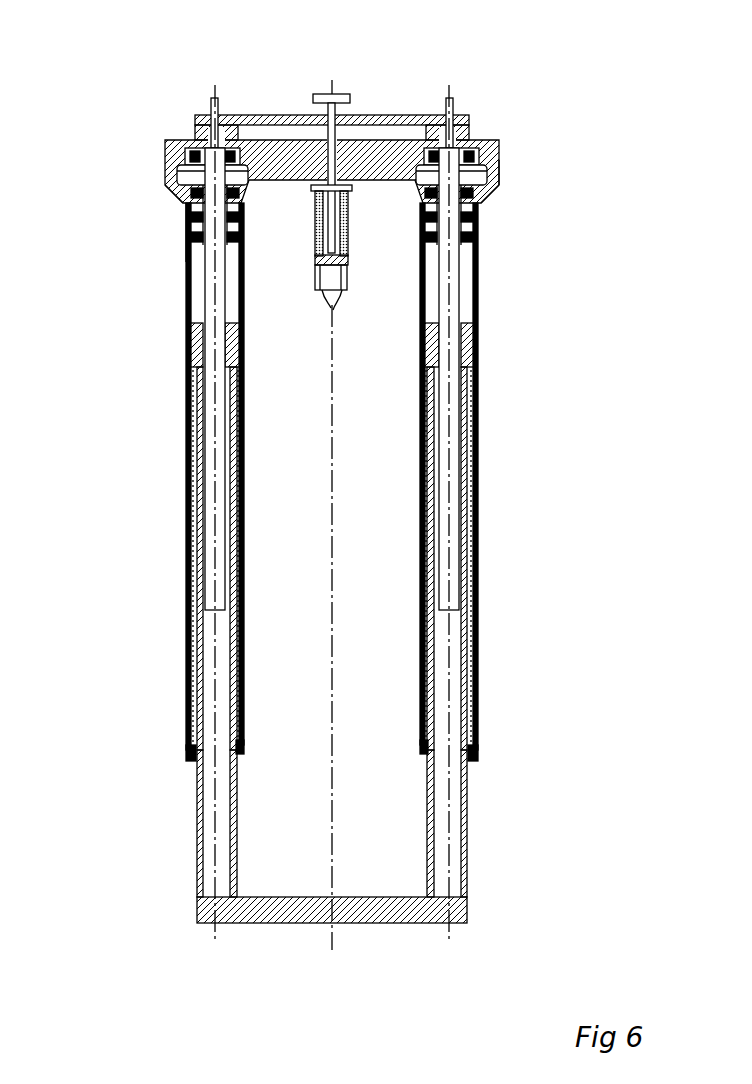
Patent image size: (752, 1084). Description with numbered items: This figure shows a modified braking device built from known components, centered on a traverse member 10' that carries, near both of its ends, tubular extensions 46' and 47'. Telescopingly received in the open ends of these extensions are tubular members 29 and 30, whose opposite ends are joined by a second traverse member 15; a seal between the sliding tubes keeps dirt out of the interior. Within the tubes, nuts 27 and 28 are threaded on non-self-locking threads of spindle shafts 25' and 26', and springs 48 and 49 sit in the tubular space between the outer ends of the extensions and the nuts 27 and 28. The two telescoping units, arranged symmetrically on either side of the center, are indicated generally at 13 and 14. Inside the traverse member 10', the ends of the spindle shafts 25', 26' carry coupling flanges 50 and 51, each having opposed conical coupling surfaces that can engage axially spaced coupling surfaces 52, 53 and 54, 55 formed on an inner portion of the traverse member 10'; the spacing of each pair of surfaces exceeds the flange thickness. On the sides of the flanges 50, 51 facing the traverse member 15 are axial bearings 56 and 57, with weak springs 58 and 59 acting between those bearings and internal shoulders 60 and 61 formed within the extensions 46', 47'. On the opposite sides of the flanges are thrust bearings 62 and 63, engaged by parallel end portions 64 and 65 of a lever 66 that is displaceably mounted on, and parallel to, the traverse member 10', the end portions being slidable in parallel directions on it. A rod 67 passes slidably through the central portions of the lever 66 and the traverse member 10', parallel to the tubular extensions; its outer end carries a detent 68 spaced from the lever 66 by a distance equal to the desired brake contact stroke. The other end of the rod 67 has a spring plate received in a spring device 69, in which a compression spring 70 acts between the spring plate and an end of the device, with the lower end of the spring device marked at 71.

The traverse member 10' is at (332, 107).
The right piston-cylinder unit 13 is at (503, 515).
The left piston-cylinder unit 14 is at (162, 517).
The traverse member 15 is at (318, 923).
The threaded spindle shaft 25' is at (521, 379).
The threaded spindle shaft 26' is at (138, 379).
The nut 27 is at (477, 345).
The nut 28 is at (187, 372).
The tubular member 29 is at (468, 825).
The tubular member 30 is at (196, 828).
The tubular extension 46' is at (514, 342).
The tubular extension 47' is at (146, 345).
The spring 48 is at (478, 745).
The spring 49 is at (187, 735).
The coupling flange 50 is at (480, 176).
The coupling flange 51 is at (187, 175).
The coupling surface 52 is at (462, 152).
The coupling surface 53 is at (496, 183).
The coupling surface 54 is at (165, 165).
The coupling surface 55 is at (172, 193).
The axial bearing 56 is at (479, 197).
The axial bearing 57 is at (183, 210).
The weak spring 58 is at (467, 215).
The weak spring 59 is at (186, 232).
The internal shoulder 60 is at (474, 240).
The internal shoulder 61 is at (185, 252).
The thrust bearing 62 is at (472, 142).
The thrust bearing 63 is at (193, 133).
The lever end portion 64 is at (470, 130).
The lever end portion 65 is at (193, 130).
The lever 66 is at (255, 116).
The rod 67 is at (341, 184).
The detent 68 is at (343, 97).
The spring device 69 is at (348, 226).
The compression spring 70 is at (344, 240).
The pin 71 is at (340, 291).